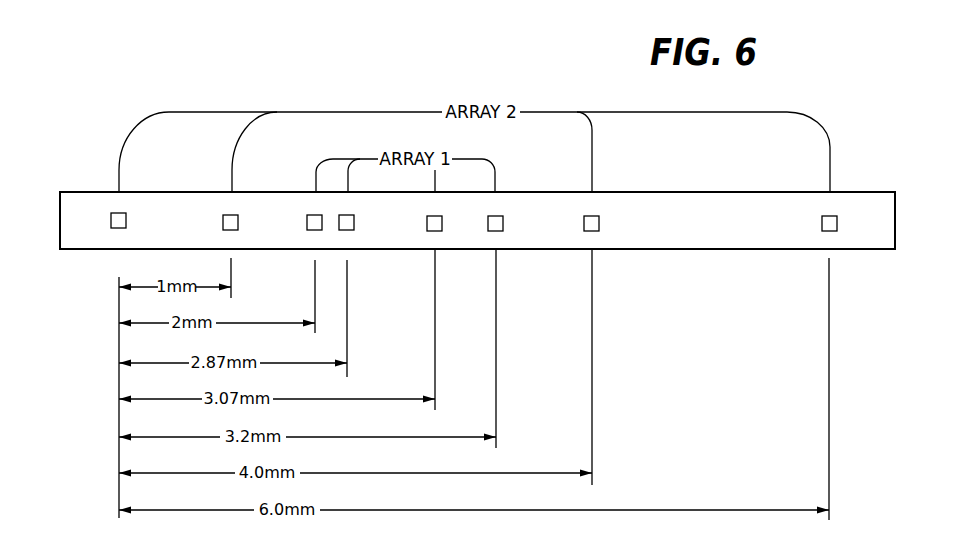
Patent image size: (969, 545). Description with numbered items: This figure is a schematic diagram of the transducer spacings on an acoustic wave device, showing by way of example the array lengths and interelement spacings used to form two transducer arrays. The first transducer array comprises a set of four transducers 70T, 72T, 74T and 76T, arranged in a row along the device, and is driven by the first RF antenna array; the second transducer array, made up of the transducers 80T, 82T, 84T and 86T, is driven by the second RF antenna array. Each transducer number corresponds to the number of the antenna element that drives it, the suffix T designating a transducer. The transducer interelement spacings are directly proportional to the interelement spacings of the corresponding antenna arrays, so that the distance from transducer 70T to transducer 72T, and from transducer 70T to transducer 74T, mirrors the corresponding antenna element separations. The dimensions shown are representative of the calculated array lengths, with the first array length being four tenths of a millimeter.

The transducer 80T is at (126, 217).
The transducer 82T is at (238, 218).
The transducer 70T is at (307, 228).
The transducer 72T is at (355, 218).
The transducer 74T is at (443, 218).
The transducer 76T is at (504, 218).
The transducer 84T is at (600, 218).
The transducer 86T is at (822, 224).